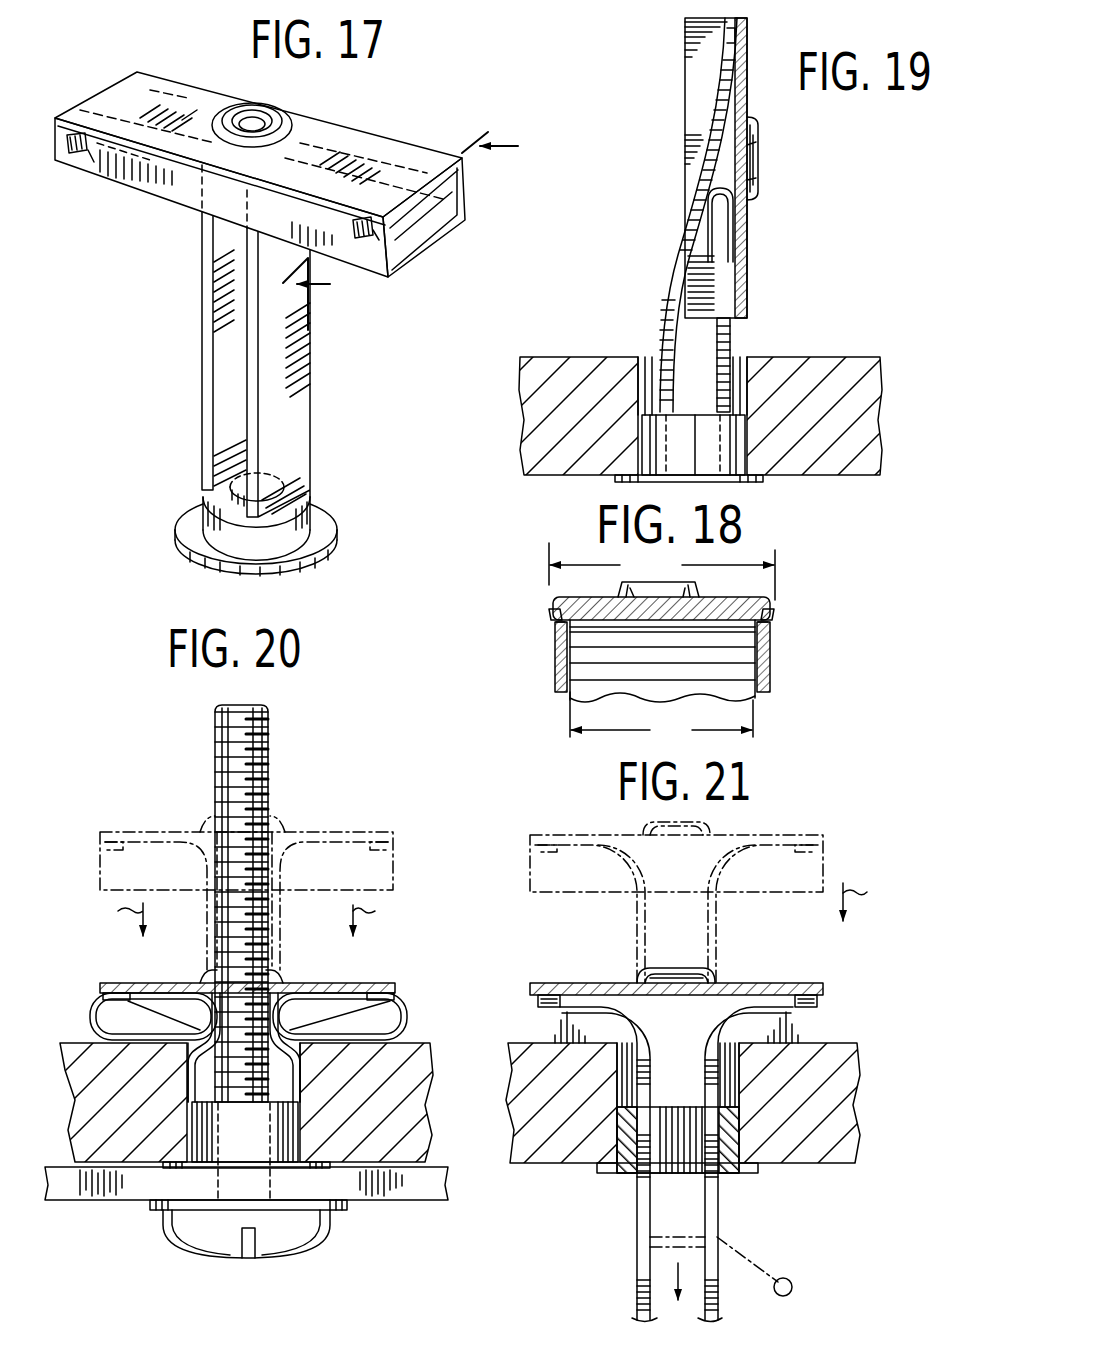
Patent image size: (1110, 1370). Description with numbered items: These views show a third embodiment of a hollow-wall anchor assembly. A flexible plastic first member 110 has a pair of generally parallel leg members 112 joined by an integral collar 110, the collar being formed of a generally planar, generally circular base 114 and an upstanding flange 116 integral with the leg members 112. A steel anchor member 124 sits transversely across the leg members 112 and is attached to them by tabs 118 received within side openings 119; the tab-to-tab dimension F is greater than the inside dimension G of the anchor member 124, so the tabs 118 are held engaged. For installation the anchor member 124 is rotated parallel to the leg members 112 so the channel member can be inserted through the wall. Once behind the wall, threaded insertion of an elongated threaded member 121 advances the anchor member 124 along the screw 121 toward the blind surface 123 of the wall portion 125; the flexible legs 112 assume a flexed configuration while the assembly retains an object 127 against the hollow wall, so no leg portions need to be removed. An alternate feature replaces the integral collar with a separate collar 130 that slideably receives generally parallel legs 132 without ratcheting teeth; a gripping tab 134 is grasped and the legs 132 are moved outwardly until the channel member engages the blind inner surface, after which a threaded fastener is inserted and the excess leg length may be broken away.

In FIG. 17, the first member / collar 110 is at (263, 515).
In FIG. 19, the first member / collar 110 is at (694, 438).
In FIG. 20, the first member / collar 110 is at (261, 1150).
In FIG. 21, the first member / collar 110 is at (643, 1119).
In FIG. 17, the leg members 112 is at (220, 372).
In FIG. 19, the leg members 112 is at (672, 286).
In FIG. 18, the leg members 112 is at (580, 692).
In FIG. 20, the leg members 112 is at (244, 1047).
In FIG. 17, the base 114 is at (328, 527).
In FIG. 19, the base 114 is at (750, 482).
In FIG. 20, the base 114 is at (325, 1168).
In FIG. 21, the base 114 is at (677, 1168).
In FIG. 17, the flange 116 is at (212, 521).
In FIG. 19, the flange 116 is at (655, 437).
In FIG. 20, the flange 116 is at (205, 1128).
In FIG. 21, the flange 116 is at (678, 1075).
In FIG. 17, the tabs 118 is at (70, 152).
In FIG. 19, the tabs 118 is at (733, 33).
In FIG. 18, the tabs 118 is at (553, 613).
In FIG. 20, the tabs 118 is at (100, 992).
In FIG. 21, the tabs 118 is at (540, 1003).
In FIG. 17, the side openings 119 is at (89, 160).
In FIG. 18, the side openings 119 is at (557, 626).
In FIG. 20, the elongated threaded member 121 is at (247, 770).
In FIG. 19, the blind surface 123 is at (838, 357).
In FIG. 20, the blind surface 123 is at (65, 1043).
In FIG. 21, the blind surface 123 is at (845, 1043).
In FIG. 17, the anchor member 124 is at (391, 129).
In FIG. 19, the anchor member 124 is at (750, 233).
In FIG. 18, the anchor member 124 is at (740, 597).
In FIG. 20, the anchor member 124 is at (364, 980).
In FIG. 21, the anchor member 124 is at (761, 833).
In FIG. 19, the wall portion 125 is at (535, 412).
In FIG. 20, the wall portion 125 is at (85, 1116).
In FIG. 21, the wall portion 125 is at (848, 1126).
In FIG. 20, the object 127 is at (432, 1180).
In FIG. 21, the separate collar 130 is at (617, 1133).
In FIG. 20, the legs 132 is at (175, 1015).
In FIG. 21, the legs 132 is at (637, 1190).
In FIG. 21, the gripping tab 134 is at (784, 1278).